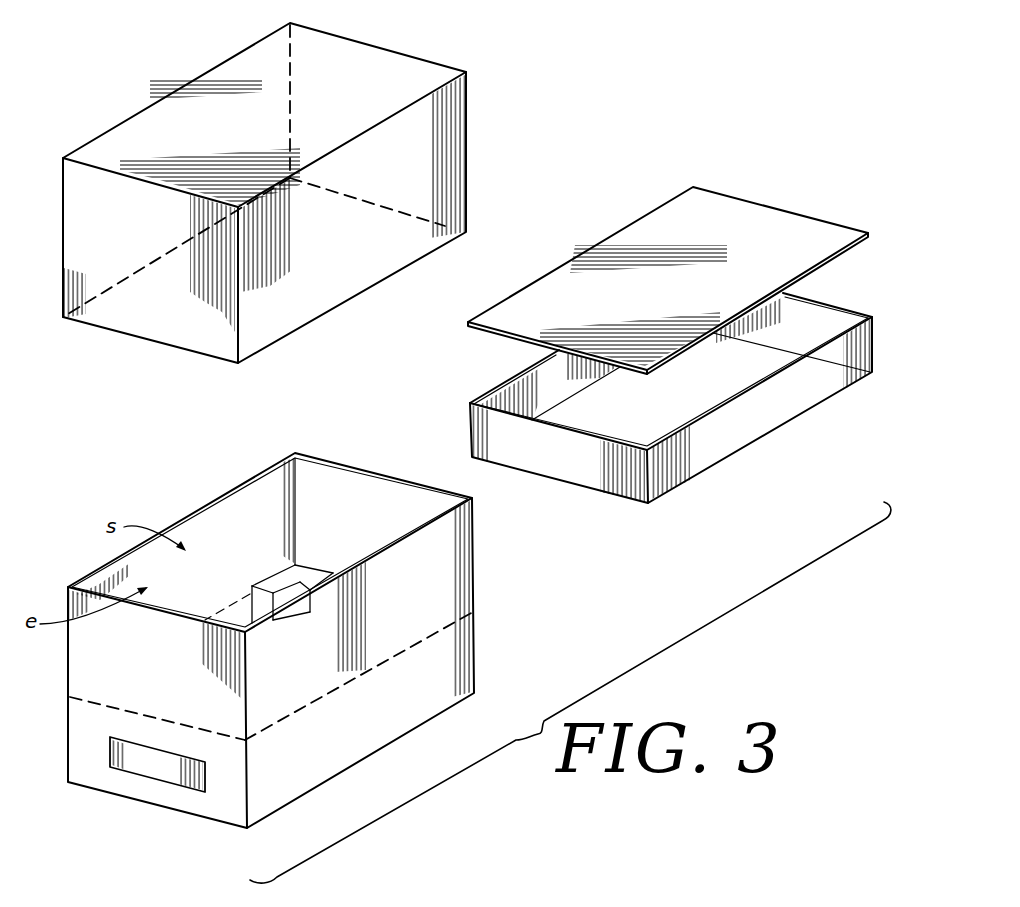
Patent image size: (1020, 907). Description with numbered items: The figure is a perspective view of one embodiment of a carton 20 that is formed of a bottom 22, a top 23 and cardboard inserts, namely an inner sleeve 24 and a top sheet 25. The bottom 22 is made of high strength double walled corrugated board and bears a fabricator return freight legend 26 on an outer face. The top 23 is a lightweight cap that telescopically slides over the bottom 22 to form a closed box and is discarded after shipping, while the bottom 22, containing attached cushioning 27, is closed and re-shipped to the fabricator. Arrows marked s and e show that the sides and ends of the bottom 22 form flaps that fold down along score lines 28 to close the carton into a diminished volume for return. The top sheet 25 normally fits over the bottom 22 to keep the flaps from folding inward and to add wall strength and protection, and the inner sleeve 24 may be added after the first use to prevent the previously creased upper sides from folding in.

The carton 20 is at (640, 122).
The bottom 22 is at (463, 650).
The top 23 is at (440, 157).
The inner sleeve 24 is at (823, 318).
The top sheet 25 is at (740, 218).
The fabricator return freight legend 26 is at (152, 767).
The attached cushioning 27 is at (275, 581).
The score lines 28 is at (92, 702).